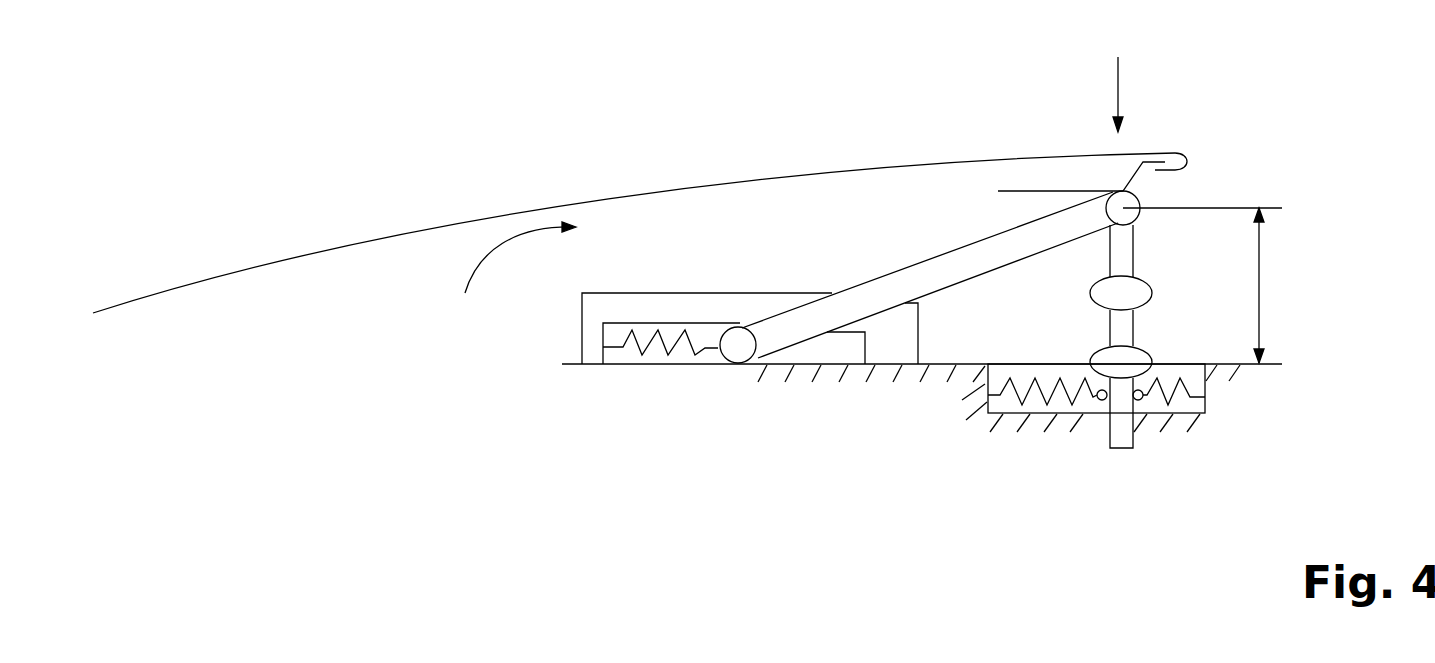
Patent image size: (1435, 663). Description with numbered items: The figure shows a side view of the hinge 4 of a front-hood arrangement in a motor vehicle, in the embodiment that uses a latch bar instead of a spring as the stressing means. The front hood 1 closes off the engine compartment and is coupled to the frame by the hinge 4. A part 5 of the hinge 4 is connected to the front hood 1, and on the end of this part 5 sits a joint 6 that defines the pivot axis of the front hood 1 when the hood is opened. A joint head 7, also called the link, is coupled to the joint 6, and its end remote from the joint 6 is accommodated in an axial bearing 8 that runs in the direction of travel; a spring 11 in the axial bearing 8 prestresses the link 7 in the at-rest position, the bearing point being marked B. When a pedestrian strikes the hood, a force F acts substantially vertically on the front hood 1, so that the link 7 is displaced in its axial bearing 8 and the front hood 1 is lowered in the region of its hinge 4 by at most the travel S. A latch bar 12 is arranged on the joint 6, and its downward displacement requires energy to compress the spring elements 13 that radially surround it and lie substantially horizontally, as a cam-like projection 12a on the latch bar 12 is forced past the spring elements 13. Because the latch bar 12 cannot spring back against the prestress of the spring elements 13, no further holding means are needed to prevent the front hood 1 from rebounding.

The front hood 1 is at (290, 253).
The hinge 4 is at (507, 271).
The part of the hinge 5 is at (993, 213).
The joint 6 is at (1163, 207).
The joint head 7 is at (945, 273).
The axial bearing 8 is at (580, 323).
The spring 11 is at (633, 323).
The latch bar 12 is at (1122, 441).
The cam 12a is at (1152, 282).
The spring elements 13 is at (1165, 403).
The bearing point B is at (735, 350).
The force F is at (1129, 79).
The maximum travel S is at (1222, 285).